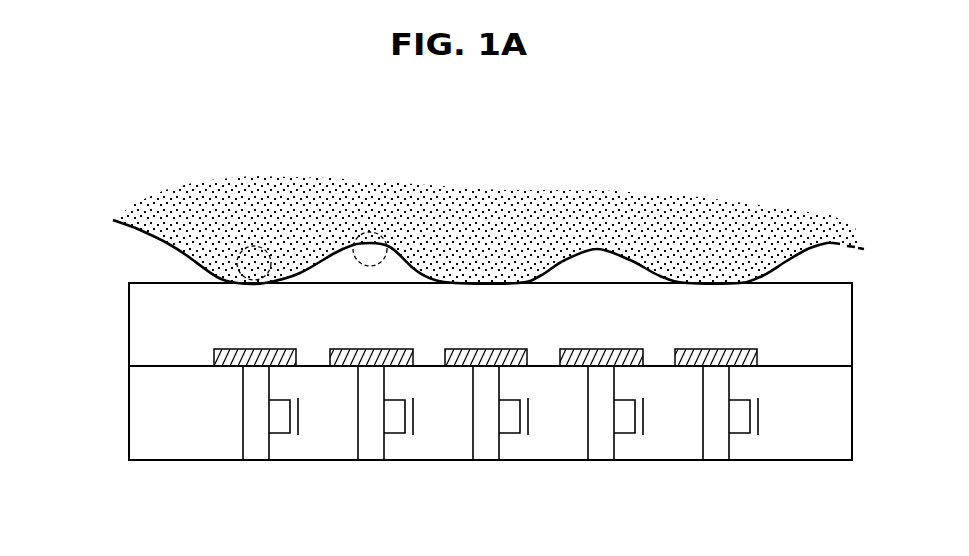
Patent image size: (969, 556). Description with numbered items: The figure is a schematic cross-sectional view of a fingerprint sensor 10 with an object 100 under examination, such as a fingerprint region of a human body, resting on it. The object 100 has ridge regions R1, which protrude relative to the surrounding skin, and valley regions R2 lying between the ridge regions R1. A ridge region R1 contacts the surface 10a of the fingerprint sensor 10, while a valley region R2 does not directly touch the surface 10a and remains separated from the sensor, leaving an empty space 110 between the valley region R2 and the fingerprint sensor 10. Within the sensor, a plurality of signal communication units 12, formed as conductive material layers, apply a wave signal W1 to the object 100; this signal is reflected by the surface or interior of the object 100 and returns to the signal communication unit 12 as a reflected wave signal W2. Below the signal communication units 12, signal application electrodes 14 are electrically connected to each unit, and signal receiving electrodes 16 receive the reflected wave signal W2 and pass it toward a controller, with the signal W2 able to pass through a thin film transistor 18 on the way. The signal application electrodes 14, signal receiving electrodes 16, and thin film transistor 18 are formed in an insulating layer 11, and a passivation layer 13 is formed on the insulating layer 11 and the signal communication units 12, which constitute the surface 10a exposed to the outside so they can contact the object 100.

The fingerprint sensor 10 is at (105, 379).
The surface of the fingerprint sensor 10a is at (148, 283).
The insulating layer 11 is at (137, 423).
The signal communication unit 12 is at (214, 352).
The passivation layer 13 is at (137, 320).
The signal application electrode 14 is at (243, 441).
The signal receiving electrode 16 is at (269, 382).
The thin film transistor 18 is at (285, 434).
The object under examination 100 is at (178, 236).
The empty space 110 is at (407, 270).
The ridge region R1 is at (255, 246).
The valley region R2 is at (370, 232).
The wave signal W1 is at (247, 298).
The reflected wave signal W2 is at (271, 290).